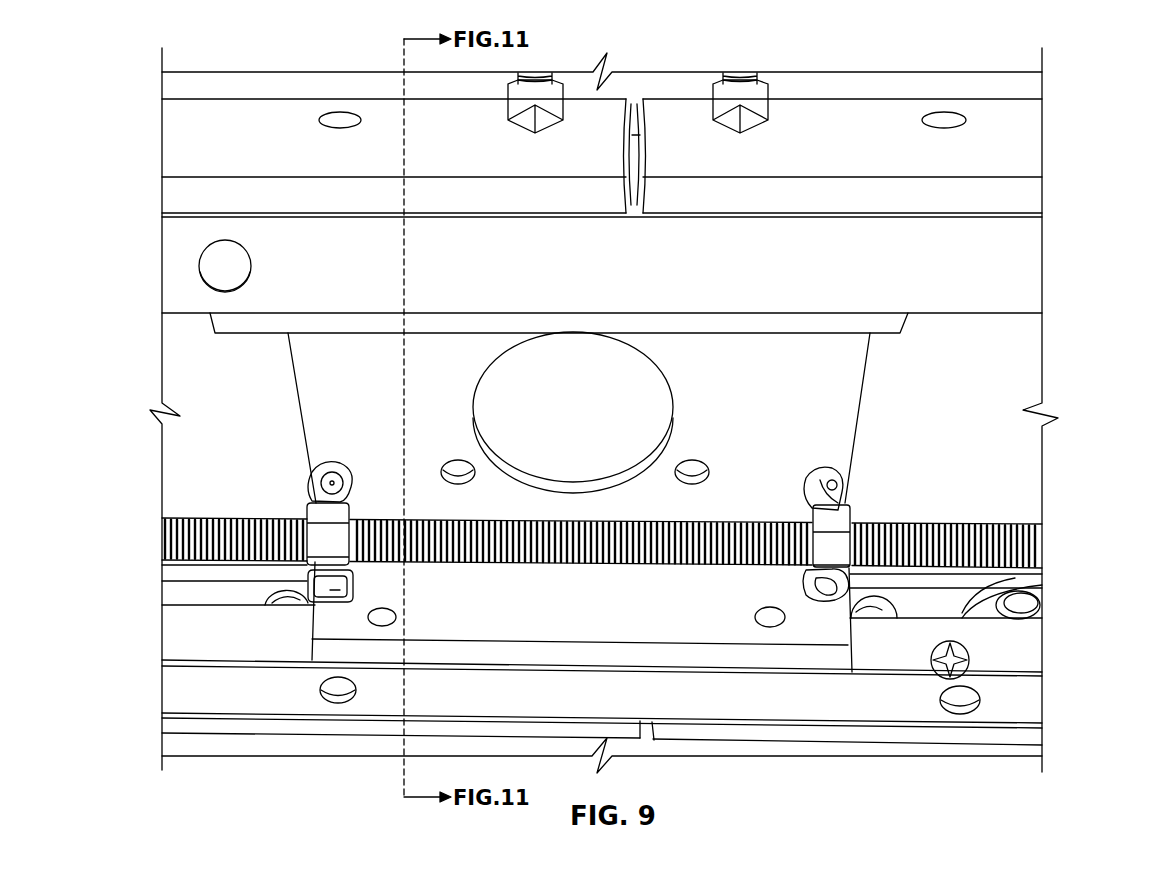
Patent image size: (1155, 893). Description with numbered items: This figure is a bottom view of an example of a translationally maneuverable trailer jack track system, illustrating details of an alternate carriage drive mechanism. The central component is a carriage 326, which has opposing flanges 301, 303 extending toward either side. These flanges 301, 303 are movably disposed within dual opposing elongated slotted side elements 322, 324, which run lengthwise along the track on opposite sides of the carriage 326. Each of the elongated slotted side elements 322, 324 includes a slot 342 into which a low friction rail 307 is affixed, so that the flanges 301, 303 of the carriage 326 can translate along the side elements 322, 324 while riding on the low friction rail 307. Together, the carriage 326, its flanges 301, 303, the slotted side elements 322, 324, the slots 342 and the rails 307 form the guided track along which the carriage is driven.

The elongated slotted side element 322 is at (1027, 263).
The flange 301 is at (900, 322).
The carriage 326 is at (863, 383).
The flange 303 is at (326, 631).
The low friction rail 307 is at (1005, 652).
The slot 342 is at (1015, 578).
The elongated slotted side element 324 is at (805, 730).